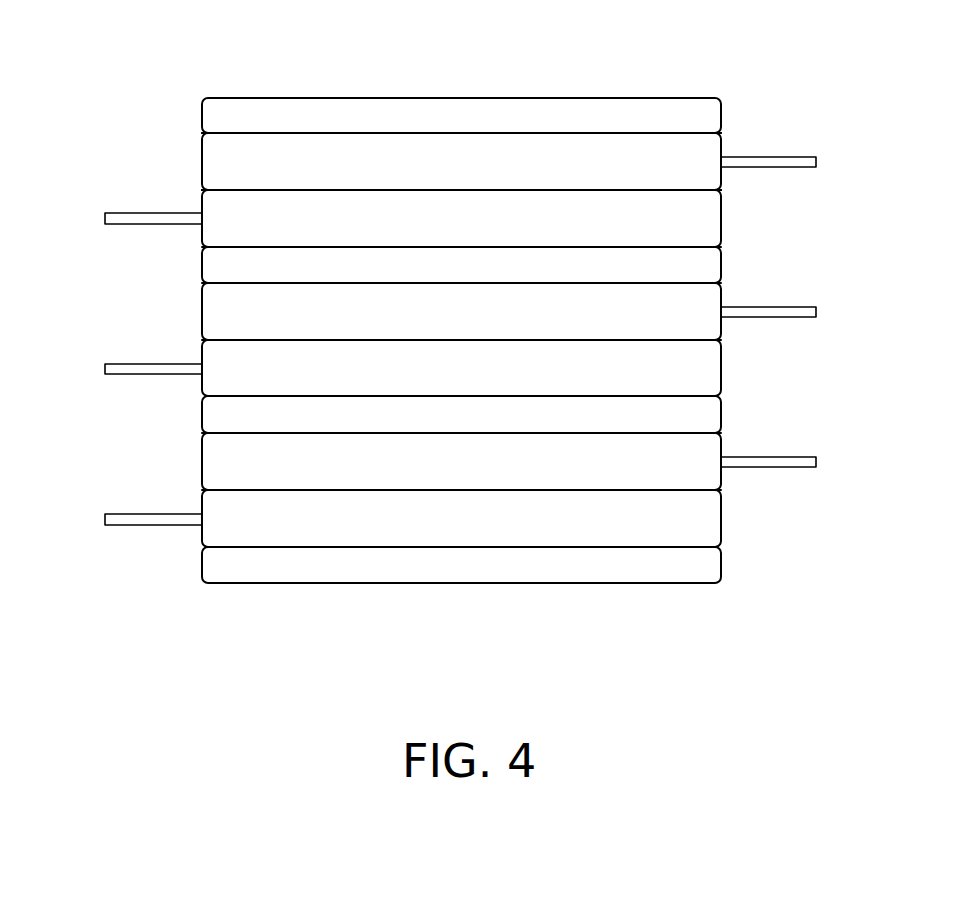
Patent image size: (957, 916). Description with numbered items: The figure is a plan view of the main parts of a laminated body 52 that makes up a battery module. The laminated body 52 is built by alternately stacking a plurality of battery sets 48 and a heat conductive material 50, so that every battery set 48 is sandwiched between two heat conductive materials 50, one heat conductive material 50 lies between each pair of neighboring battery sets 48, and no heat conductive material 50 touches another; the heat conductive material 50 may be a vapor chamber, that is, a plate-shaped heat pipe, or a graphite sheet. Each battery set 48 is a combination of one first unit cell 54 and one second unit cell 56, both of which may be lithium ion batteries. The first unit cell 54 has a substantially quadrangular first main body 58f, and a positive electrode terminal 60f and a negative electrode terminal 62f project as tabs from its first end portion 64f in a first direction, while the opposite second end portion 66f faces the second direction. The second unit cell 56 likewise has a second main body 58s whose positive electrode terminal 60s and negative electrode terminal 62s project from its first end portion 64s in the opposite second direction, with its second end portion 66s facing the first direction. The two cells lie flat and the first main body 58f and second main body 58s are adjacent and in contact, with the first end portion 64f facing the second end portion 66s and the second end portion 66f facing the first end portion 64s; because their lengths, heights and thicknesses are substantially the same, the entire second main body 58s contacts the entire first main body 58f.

The battery set 48 is at (363, 48).
The heat conductive material 50 is at (563, 262).
The laminated body 52 is at (462, 343).
The first unit cell 54 is at (363, 186).
The second unit cell 56 is at (291, 130).
The first main body 58f is at (625, 203).
The second main body 58s is at (678, 155).
The positive electrode terminal 60f is at (113, 364).
The positive electrode terminal 60s is at (810, 157).
The negative electrode terminal 62f is at (113, 213).
The negative electrode terminal 62s is at (810, 307).
The first end portion 64f is at (213, 204).
The first end portion 64s is at (708, 177).
The second end portion 66f is at (710, 218).
The second end portion 66s is at (213, 162).